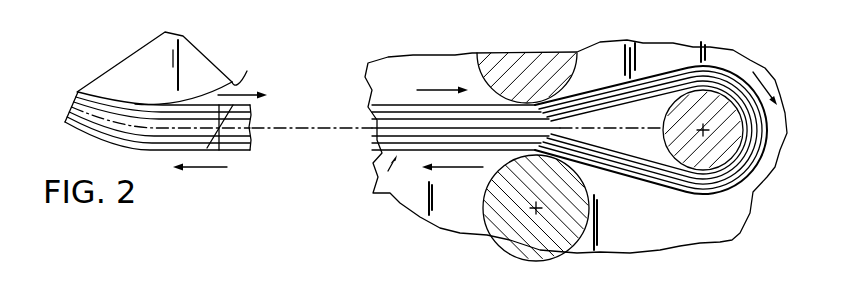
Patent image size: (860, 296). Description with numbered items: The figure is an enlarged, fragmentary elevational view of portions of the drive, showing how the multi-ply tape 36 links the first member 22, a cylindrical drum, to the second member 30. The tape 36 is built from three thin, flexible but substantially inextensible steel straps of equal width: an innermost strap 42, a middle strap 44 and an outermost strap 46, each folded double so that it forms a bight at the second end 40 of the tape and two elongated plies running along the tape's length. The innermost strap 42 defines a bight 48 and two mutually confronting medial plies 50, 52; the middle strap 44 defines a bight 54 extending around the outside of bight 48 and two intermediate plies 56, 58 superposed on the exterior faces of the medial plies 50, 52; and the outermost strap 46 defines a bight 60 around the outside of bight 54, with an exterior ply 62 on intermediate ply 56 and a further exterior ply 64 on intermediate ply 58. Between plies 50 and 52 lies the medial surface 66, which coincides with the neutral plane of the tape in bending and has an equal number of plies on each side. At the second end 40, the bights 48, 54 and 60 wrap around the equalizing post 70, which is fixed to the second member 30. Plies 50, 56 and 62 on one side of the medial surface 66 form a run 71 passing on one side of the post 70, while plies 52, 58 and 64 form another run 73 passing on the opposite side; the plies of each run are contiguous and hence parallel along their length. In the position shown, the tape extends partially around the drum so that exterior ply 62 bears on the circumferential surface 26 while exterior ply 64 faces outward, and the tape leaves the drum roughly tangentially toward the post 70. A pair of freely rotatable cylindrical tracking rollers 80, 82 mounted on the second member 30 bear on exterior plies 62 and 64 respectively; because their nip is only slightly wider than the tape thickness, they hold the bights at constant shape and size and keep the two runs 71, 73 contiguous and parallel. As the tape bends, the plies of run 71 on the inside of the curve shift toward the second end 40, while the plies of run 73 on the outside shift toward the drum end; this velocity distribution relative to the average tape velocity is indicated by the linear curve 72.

The first member 22 is at (185, 55).
The cylindrical circumferential surface 26 is at (255, 68).
The second member 30 is at (704, 242).
The multi-ply tape 36 is at (374, 193).
The second end of the tape 40 is at (611, 195).
The innermost strap 42 is at (623, 82).
The middle strap 44 is at (510, 105).
The outermost strap 46 is at (494, 85).
The bight 48 is at (722, 174).
The medial ply 50 is at (393, 128).
The medial ply 52 is at (410, 135).
The bight 54 is at (741, 170).
The intermediate ply 56 is at (407, 117).
The intermediate ply 58 is at (425, 143).
The bight 60 is at (763, 156).
The exterior ply 62 is at (477, 100).
The exterior ply 64 is at (498, 150).
The medial surface 66 is at (78, 96).
The equalizing post 70 is at (683, 152).
The run 71 is at (632, 44).
The linear curve 72 is at (235, 150).
The run 73 is at (628, 196).
The tracking roller 80 is at (540, 112).
The tracking roller 82 is at (555, 230).